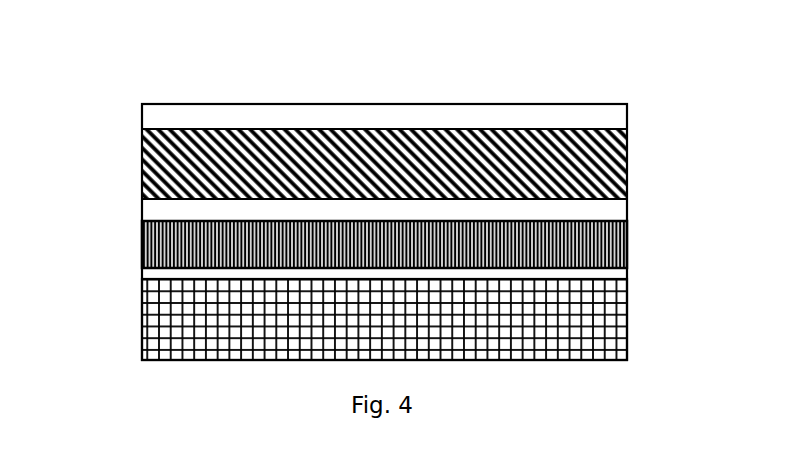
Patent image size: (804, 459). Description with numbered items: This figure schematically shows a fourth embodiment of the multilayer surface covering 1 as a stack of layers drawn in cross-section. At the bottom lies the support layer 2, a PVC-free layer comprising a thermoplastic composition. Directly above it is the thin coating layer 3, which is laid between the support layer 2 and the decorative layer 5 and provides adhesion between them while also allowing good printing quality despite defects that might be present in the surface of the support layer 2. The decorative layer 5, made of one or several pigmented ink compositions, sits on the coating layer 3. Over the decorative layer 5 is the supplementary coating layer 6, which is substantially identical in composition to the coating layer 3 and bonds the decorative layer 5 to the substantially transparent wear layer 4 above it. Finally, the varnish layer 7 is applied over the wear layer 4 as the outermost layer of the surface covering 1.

The multilayer surface covering 1 is at (112, 93).
The support layer 2 is at (613, 325).
The coating layer 3 is at (627, 267).
The wear layer 4 is at (627, 149).
The decorative layer 5 is at (627, 239).
The supplementary coating layer 6 is at (627, 207).
The varnish layer 7 is at (603, 103).